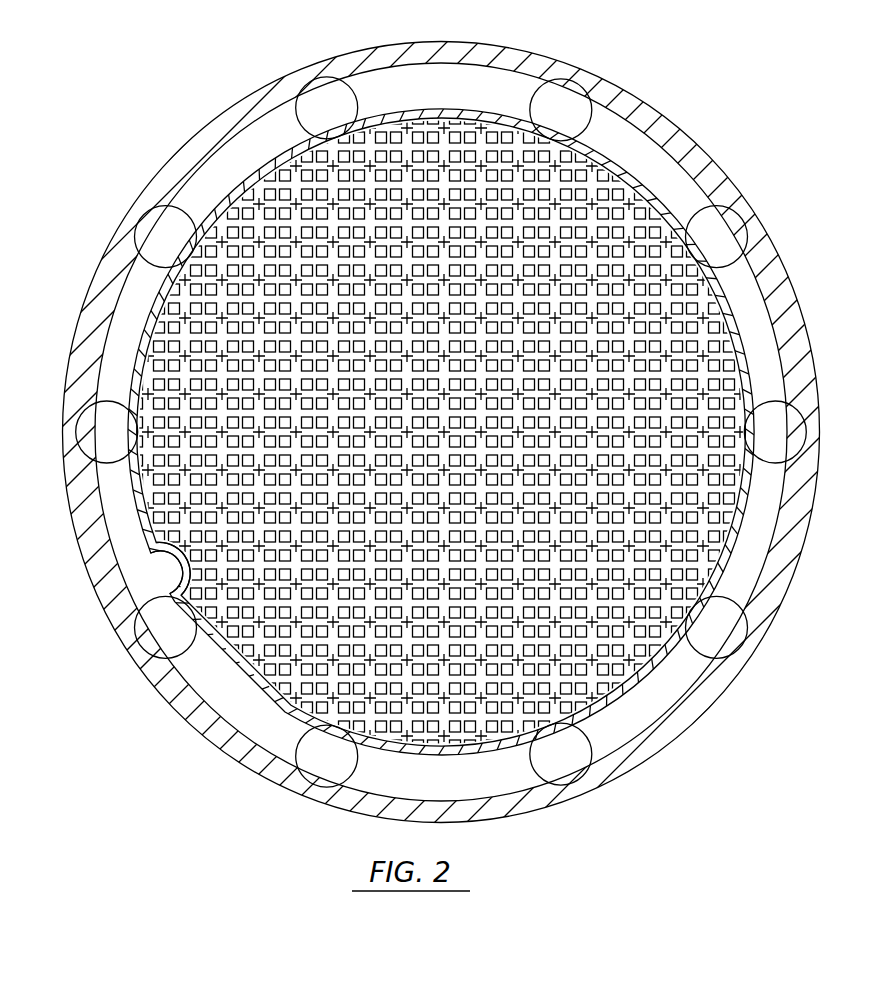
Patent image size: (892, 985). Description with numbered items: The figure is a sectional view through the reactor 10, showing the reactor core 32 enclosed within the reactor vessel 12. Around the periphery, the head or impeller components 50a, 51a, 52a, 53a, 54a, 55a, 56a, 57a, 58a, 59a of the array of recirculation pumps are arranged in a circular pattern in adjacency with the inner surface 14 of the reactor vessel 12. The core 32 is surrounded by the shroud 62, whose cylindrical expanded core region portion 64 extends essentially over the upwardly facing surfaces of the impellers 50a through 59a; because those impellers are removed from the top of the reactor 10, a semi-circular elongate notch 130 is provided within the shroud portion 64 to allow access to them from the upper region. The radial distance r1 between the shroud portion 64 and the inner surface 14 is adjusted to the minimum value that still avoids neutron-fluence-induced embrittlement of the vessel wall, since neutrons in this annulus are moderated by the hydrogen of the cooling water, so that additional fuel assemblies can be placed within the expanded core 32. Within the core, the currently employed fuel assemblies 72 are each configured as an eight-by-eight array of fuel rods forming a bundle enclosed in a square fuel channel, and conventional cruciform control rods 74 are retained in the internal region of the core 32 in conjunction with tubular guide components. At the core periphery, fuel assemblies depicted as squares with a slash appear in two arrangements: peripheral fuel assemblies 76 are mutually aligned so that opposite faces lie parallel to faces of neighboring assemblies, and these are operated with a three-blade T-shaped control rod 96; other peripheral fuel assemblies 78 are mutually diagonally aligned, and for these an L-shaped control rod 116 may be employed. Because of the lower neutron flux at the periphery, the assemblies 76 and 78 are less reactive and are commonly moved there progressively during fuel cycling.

The reactor 10 is at (148, 120).
The reactor vessel 12 is at (446, 492).
The inner surface 14 is at (800, 332).
The reactor core 32 is at (232, 655).
The impeller component 50a is at (105, 432).
The impeller component 51a is at (160, 250).
The impeller component 52a is at (320, 95).
The impeller component 53a is at (562, 100).
The impeller component 54a is at (713, 230).
The impeller component 55a is at (780, 445).
The impeller component 56a is at (723, 628).
The impeller component 57a is at (565, 762).
The impeller component 58a is at (327, 762).
The impeller component 59a is at (160, 625).
The shroud 62 is at (143, 562).
The shroud portion 64 is at (240, 735).
The fuel assemblies 72 is at (317, 220).
The cruciform control rods 74 is at (585, 290).
The peripheral region fuel assemblies 76 is at (470, 125).
The peripheral fuel assemblies 78 is at (292, 143).
The T-shaped control rod 96 is at (440, 432).
The L-shaped control rod 116 is at (320, 168).
The semi-circular elongate notch 130 is at (186, 588).
The annulus radial distance r1 is at (135, 516).